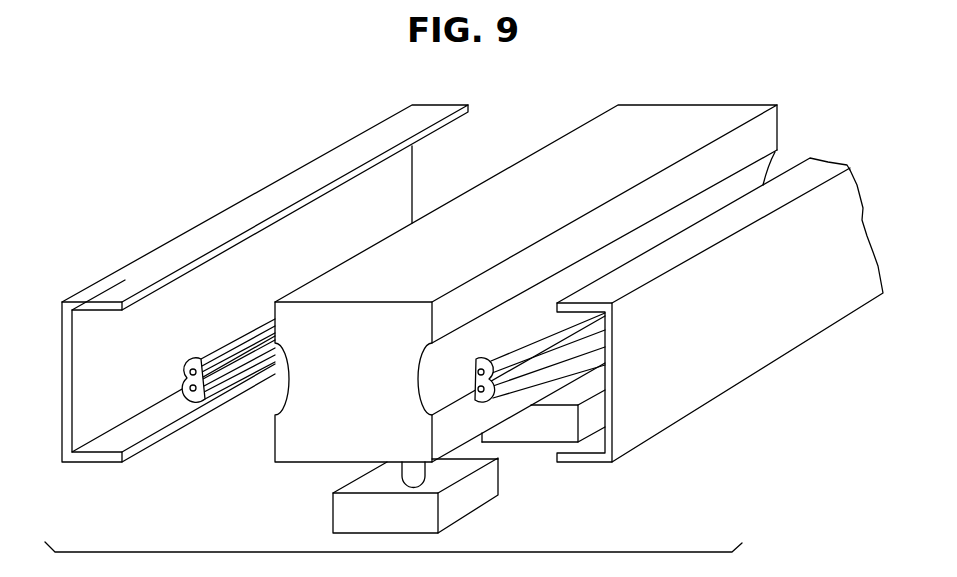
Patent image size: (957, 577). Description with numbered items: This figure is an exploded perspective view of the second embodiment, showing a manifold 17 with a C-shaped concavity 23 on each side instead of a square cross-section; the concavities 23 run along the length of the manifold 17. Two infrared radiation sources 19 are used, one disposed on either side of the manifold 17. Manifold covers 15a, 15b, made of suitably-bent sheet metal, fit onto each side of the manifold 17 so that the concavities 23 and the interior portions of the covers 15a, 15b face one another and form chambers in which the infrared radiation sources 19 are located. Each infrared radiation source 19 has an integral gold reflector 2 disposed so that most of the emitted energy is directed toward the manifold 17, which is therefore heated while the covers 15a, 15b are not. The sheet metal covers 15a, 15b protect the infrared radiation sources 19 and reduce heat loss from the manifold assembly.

The gold reflector 2 is at (204, 356).
The manifold cover 15a is at (340, 149).
The manifold cover 15b is at (677, 407).
The manifold 17 is at (375, 302).
The infrared radiation source 19 is at (218, 382).
The concavity 23 is at (284, 387).